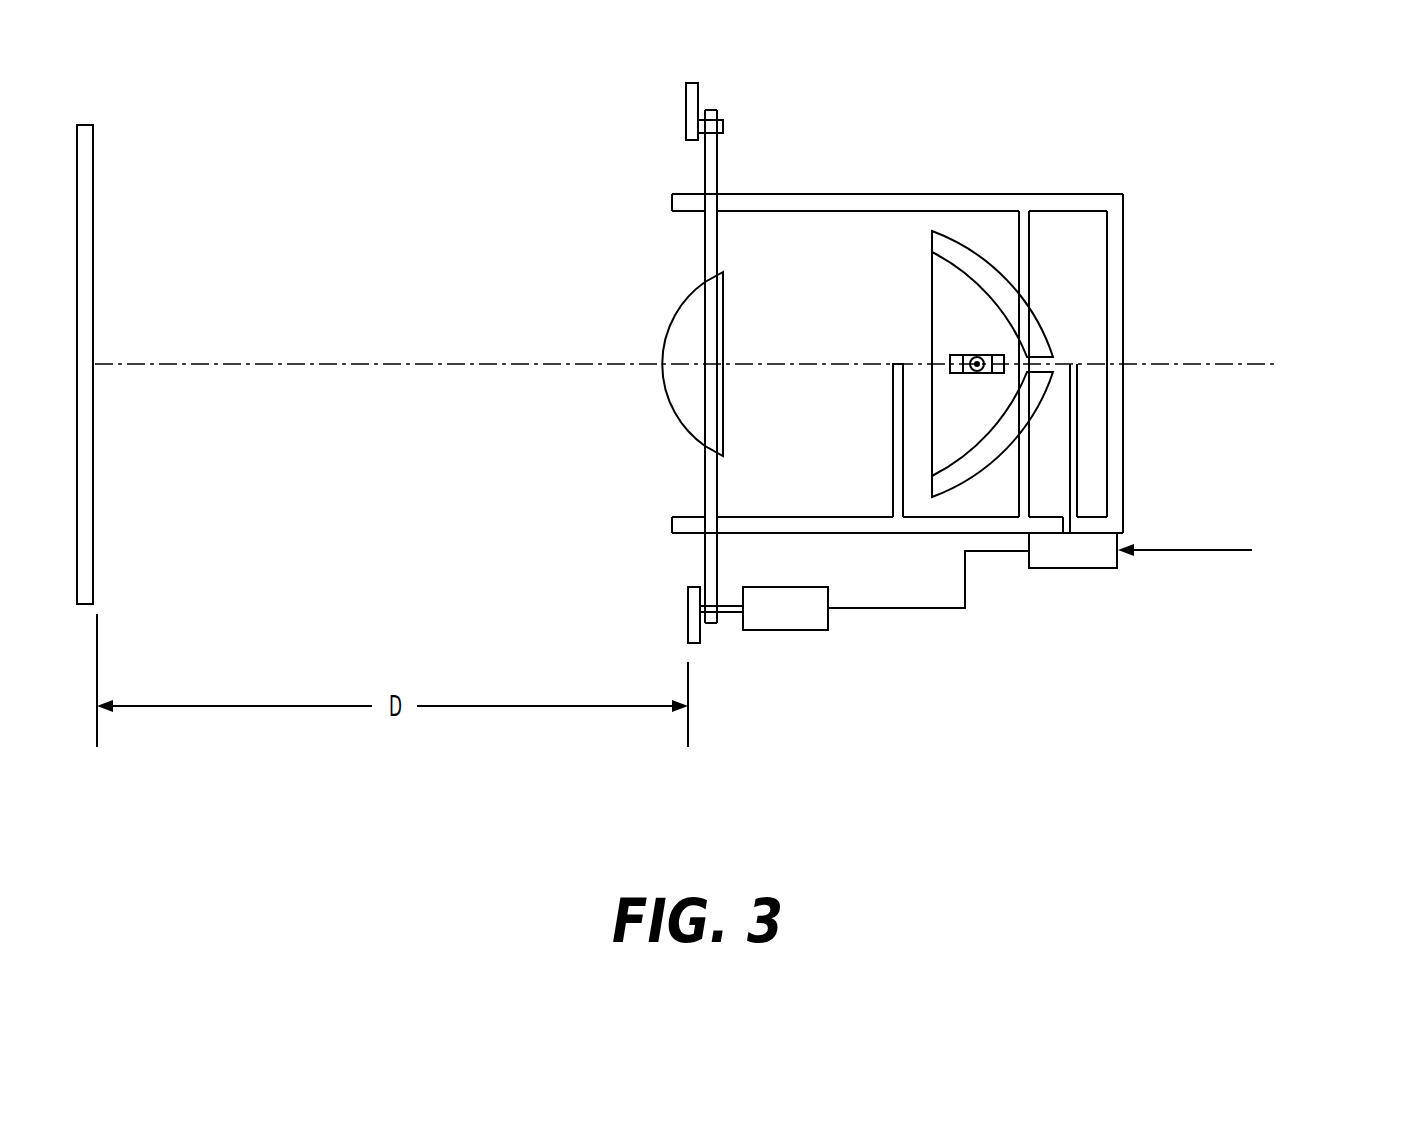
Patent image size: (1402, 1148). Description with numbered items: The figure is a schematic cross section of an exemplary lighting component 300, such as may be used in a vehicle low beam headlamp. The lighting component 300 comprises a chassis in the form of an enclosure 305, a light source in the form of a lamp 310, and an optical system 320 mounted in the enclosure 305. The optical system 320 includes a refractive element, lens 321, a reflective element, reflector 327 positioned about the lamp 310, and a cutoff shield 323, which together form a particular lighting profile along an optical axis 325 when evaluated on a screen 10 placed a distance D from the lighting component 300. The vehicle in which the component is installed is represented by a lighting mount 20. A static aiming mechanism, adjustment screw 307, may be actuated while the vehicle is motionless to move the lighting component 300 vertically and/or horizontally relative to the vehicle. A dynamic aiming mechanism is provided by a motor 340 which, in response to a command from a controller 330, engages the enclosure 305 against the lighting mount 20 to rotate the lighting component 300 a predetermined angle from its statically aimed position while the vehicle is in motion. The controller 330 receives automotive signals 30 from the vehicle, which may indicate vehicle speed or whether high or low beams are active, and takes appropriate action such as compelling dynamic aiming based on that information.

The lighting component 300 is at (290, 104).
The screen 10 is at (77, 160).
The optical axis 325 is at (497, 362).
The enclosure 305 is at (820, 193).
The adjustment screw 307 is at (723, 126).
The optical system 320 is at (643, 411).
The lens 321 is at (700, 288).
The cutoff shield 323 is at (893, 400).
The reflector 327 is at (932, 240).
The lamp 310 is at (985, 375).
The controller 330 is at (1075, 570).
The automotive signals 30 is at (1170, 548).
The motor 340 is at (785, 632).
The lighting mount 20 is at (688, 624).